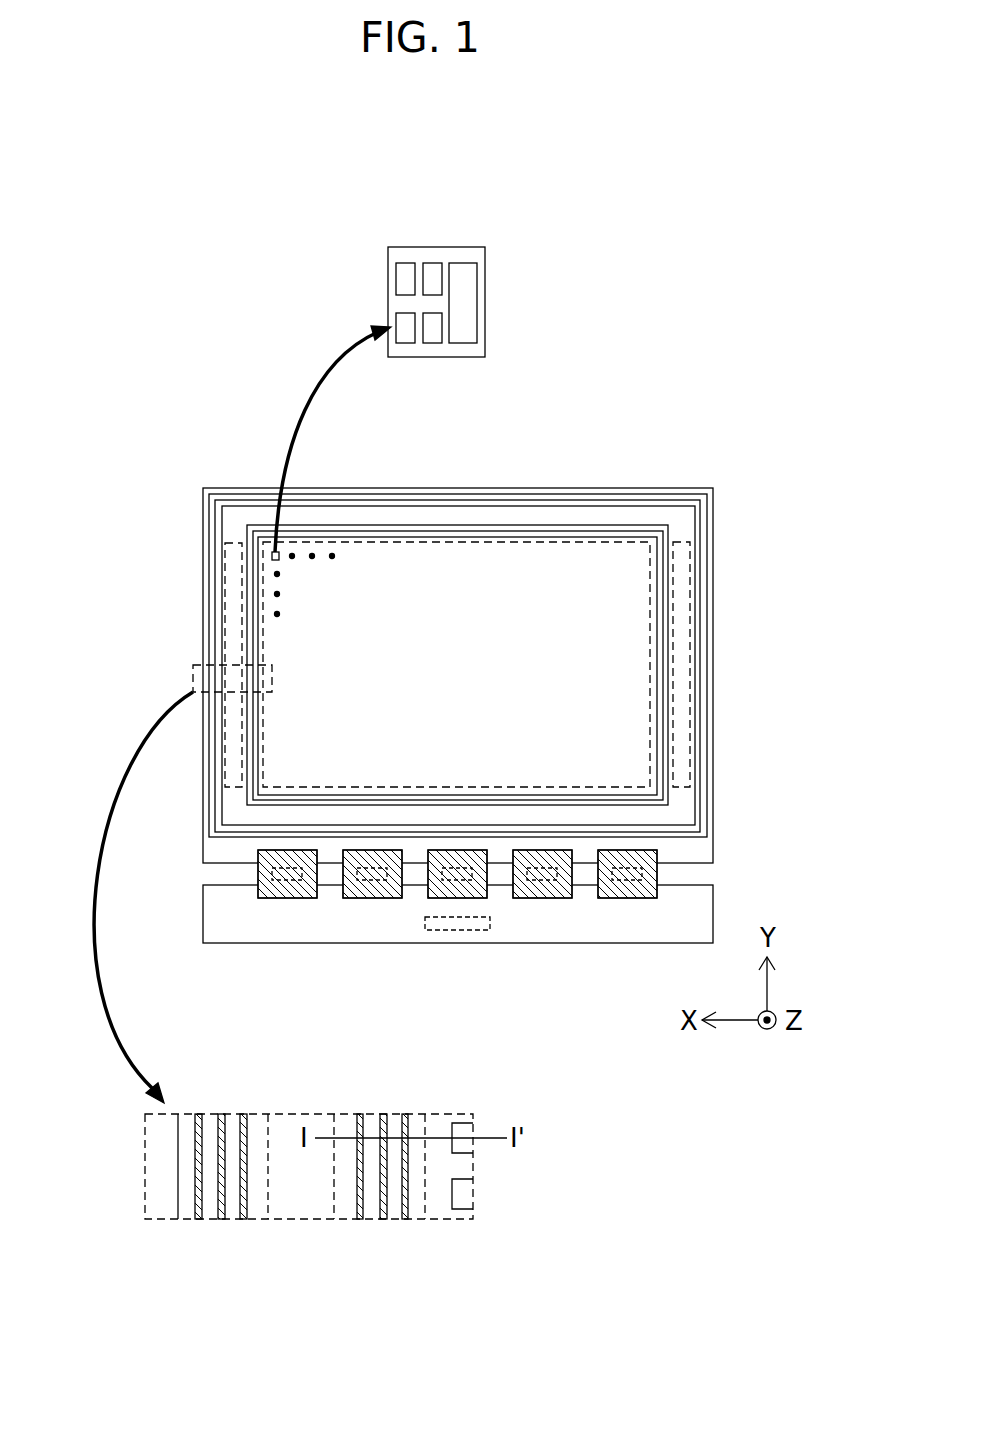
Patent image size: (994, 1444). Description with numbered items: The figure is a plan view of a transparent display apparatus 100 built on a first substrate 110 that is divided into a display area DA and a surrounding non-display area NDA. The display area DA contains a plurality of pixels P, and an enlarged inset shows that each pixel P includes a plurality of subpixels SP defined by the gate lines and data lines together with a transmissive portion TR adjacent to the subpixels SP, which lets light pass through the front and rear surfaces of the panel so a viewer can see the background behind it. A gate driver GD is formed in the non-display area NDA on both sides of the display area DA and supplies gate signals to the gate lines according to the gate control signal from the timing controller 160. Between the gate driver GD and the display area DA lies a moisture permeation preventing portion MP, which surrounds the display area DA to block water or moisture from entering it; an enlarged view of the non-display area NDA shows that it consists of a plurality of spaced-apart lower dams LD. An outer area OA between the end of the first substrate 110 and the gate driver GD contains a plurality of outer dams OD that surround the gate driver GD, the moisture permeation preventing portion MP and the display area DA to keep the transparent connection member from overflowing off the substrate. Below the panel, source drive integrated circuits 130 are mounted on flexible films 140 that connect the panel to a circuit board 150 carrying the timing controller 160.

The transparent display apparatus 100 is at (142, 455).
The first substrate 110 is at (203, 523).
The source drive integrated circuit 130 is at (538, 882).
The flexible film 140 is at (560, 894).
The circuit board 150 is at (603, 928).
The timing controller 160 is at (459, 932).
The outer area OA is at (650, 480).
The display area DA is at (263, 594).
The gate driver GD is at (225, 628).
The moisture permeation preventing portion MP is at (680, 616).
The non-display area NDA is at (217, 850).
The outer dam OD is at (243, 1220).
The lower dam LD is at (405, 1220).
The pixel P is at (281, 560).
The subpixel SP is at (405, 252).
The transmissive portion TR is at (463, 252).